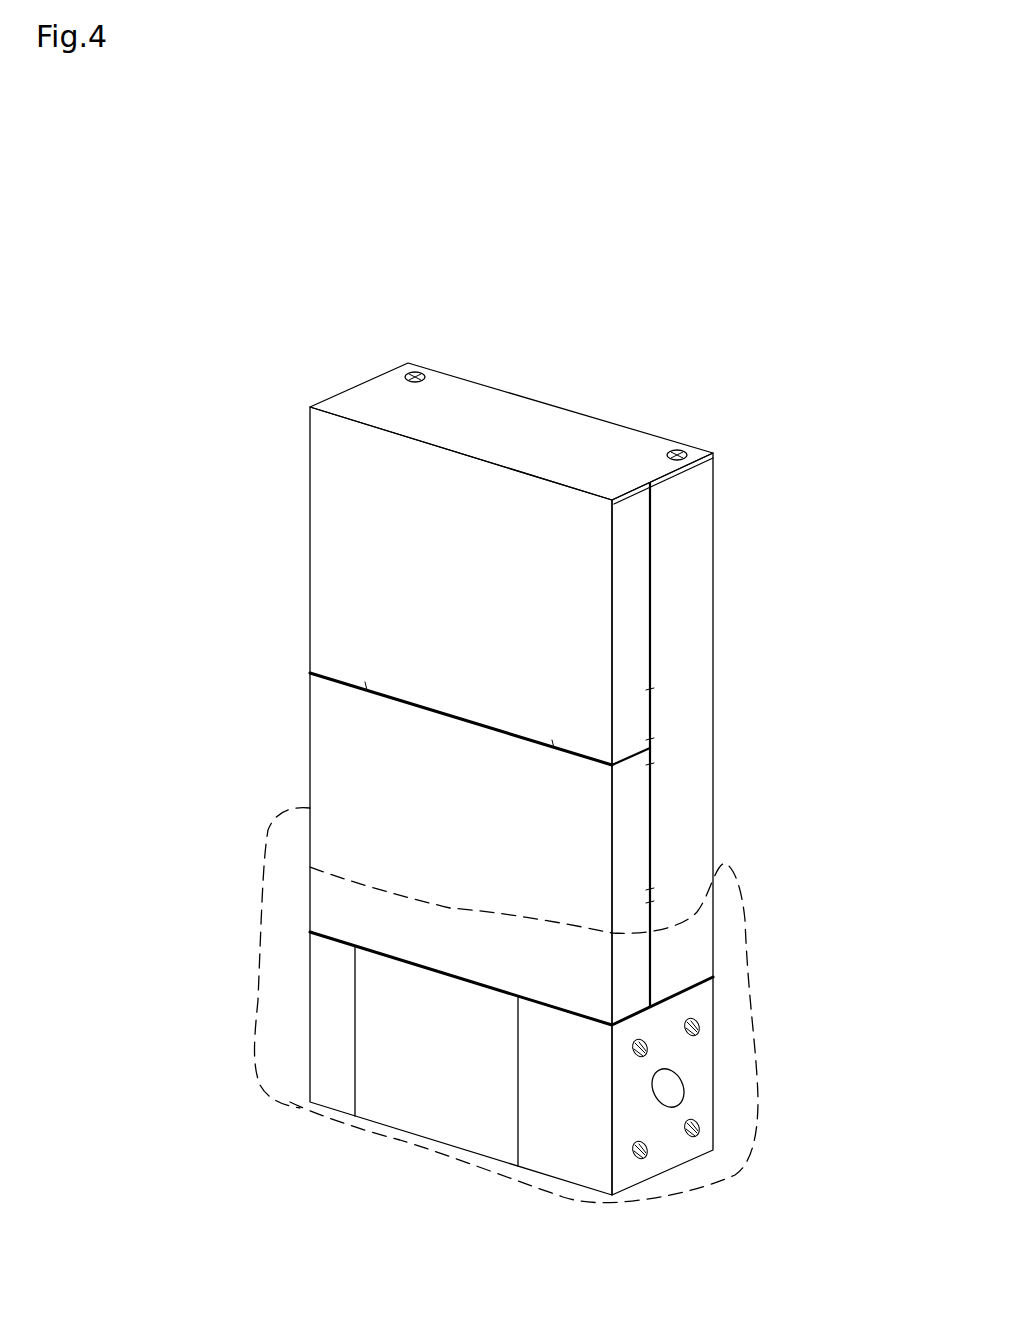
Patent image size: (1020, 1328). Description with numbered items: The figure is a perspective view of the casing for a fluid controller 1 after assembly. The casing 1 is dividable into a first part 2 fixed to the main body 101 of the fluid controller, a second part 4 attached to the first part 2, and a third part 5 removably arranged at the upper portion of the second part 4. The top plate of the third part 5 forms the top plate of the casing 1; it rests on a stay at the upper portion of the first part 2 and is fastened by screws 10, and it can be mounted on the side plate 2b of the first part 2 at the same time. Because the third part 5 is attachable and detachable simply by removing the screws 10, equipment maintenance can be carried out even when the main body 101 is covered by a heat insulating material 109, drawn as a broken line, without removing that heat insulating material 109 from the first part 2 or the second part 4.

The casing for a fluid controller 1 is at (573, 357).
The first part 2 is at (732, 718).
The side plate 2b is at (684, 631).
The second part 4 is at (336, 742).
The third part 5 is at (345, 546).
The screw 10 is at (417, 372).
The main body 101 is at (377, 1097).
The heat insulating material 109 is at (252, 1038).